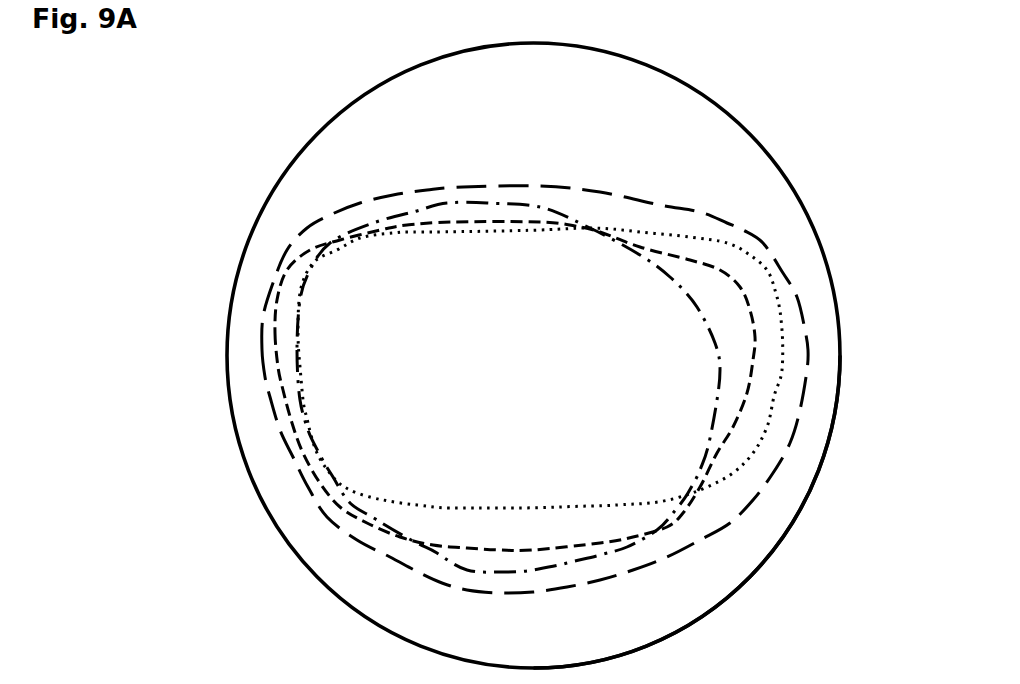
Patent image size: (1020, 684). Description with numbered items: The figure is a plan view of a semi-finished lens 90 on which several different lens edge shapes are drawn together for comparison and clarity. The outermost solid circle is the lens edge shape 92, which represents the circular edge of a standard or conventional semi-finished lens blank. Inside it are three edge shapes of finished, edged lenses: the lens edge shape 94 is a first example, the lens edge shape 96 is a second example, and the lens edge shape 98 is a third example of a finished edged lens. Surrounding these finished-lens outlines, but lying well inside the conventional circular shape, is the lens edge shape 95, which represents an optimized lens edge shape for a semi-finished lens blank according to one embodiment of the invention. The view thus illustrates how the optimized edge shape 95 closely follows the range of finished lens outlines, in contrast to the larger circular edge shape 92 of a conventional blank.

The semi-finished lens 90 is at (812, 183).
The lens edge shape 92 is at (782, 537).
The lens edge shape 94 is at (365, 494).
The lens edge shape 95 is at (395, 194).
The lens edge shape 96 is at (430, 543).
The lens edge shape 98 is at (483, 571).